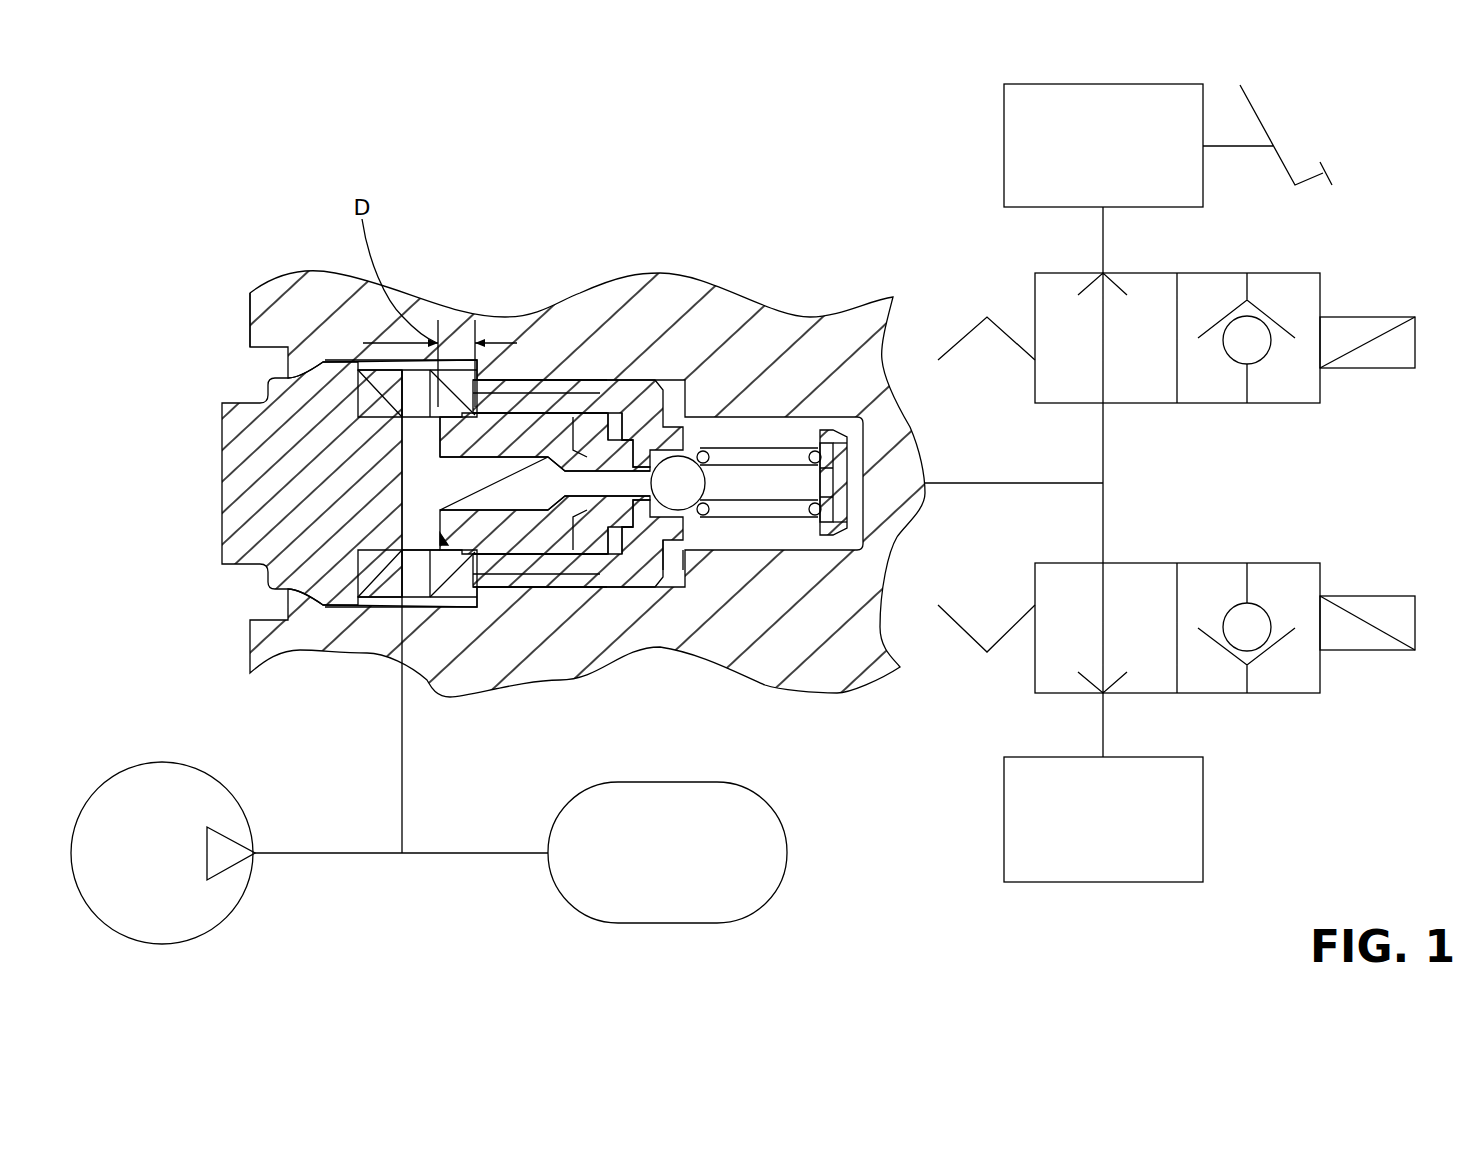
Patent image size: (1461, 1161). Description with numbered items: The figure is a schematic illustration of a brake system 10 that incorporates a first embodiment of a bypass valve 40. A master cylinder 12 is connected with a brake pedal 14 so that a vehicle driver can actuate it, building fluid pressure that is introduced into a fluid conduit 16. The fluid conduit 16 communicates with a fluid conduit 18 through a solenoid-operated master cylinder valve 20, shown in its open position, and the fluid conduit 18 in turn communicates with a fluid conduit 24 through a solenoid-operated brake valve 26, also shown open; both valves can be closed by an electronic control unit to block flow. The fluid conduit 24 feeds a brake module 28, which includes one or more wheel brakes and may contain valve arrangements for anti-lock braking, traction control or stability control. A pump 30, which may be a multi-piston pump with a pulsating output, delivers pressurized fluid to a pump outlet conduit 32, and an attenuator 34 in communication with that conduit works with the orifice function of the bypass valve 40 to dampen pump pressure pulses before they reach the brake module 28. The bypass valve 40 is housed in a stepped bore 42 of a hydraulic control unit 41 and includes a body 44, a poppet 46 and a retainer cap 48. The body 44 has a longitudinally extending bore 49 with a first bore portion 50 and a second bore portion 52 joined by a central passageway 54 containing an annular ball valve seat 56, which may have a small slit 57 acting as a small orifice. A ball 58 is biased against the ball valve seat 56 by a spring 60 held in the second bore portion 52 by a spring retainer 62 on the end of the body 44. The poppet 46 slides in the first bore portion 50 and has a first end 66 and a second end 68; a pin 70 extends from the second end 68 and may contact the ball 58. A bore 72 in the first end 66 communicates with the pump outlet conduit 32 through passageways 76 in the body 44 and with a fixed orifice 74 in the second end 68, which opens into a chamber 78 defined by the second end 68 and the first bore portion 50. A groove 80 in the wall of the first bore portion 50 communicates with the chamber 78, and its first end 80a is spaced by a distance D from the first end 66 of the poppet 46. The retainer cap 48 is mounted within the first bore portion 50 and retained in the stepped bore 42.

The brake system 10 is at (338, 112).
The master cylinder 12 is at (1004, 130).
The brake pedal 14 is at (1255, 105).
The fluid conduit 16 is at (1103, 240).
The fluid conduit 18 is at (1103, 445).
The master cylinder valve 20 is at (1320, 293).
The fluid conduit 24 is at (1103, 735).
The brake valve 26 is at (1320, 583).
The brake module 28 is at (1203, 822).
The pump 30 is at (148, 768).
The pump outlet conduit 32 is at (306, 855).
The attenuator 34 is at (787, 853).
The bypass valve 40 is at (285, 252).
The hydraulic control unit 41 is at (250, 293).
The stepped bore 42 is at (693, 557).
The body 44 is at (668, 462).
The poppet 46 is at (563, 545).
The retainer cap 48 is at (220, 485).
The bore 49 is at (445, 538).
The first bore portion 50 is at (535, 545).
The second bore portion 52 is at (805, 525).
The central passageway 54 is at (613, 545).
The ball valve seat 56 is at (760, 450).
The slit 57 is at (720, 447).
The ball 58 is at (822, 470).
The spring 60 is at (800, 420).
The spring retainer 62 is at (822, 505).
The first end 66 is at (442, 418).
The second end 68 is at (600, 545).
The pin 70 is at (605, 415).
The bore 72 is at (578, 545).
The fixed orifice 74 is at (600, 400).
The passageways 76 is at (405, 577).
The chamber 78 is at (597, 470).
The groove 80 is at (553, 380).
The first end 80a is at (533, 385).